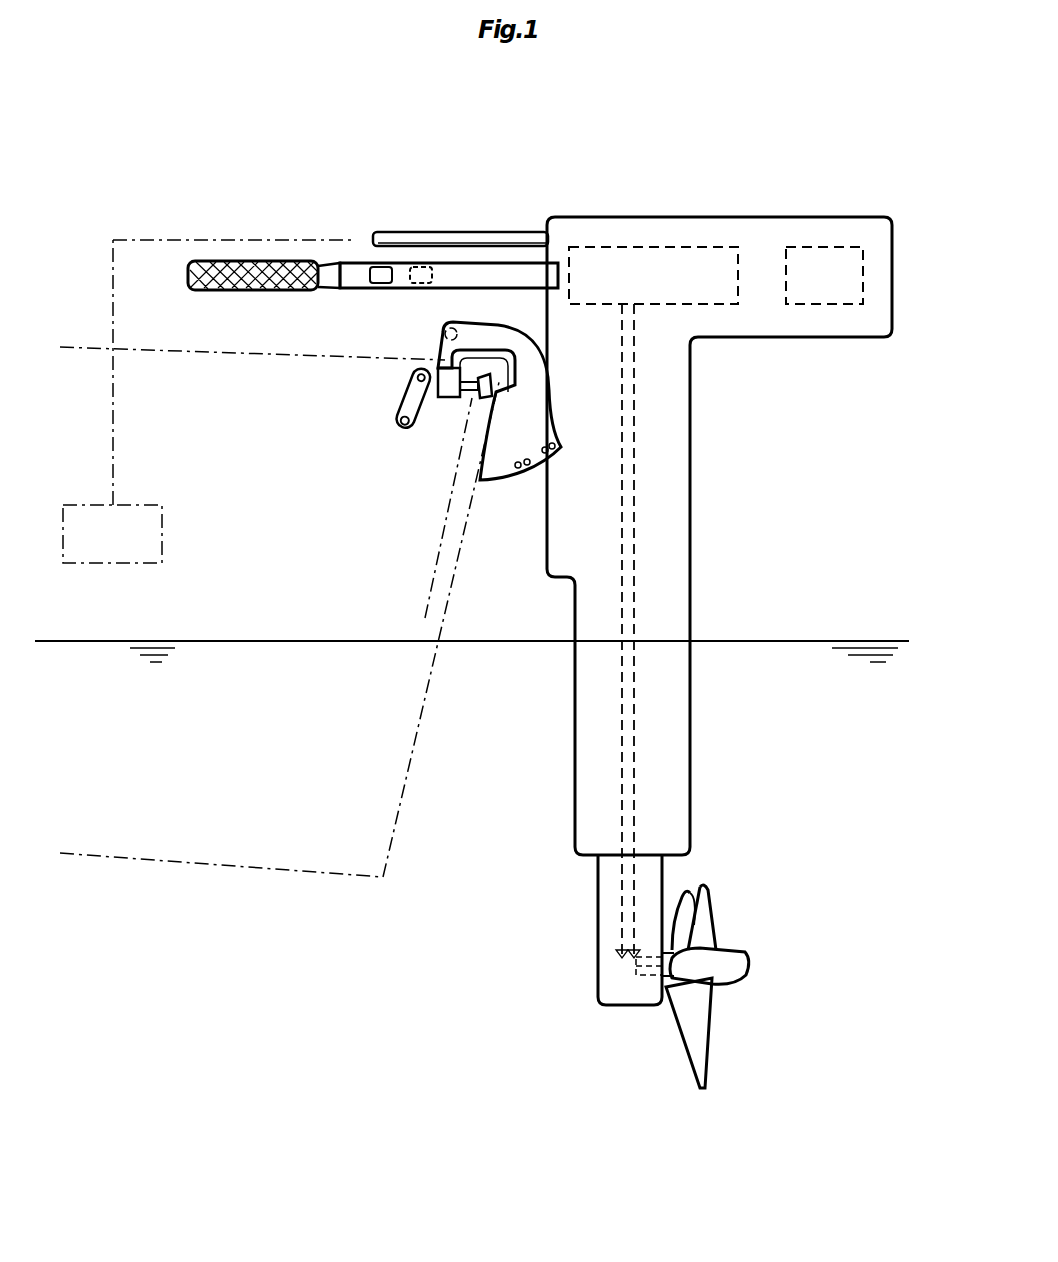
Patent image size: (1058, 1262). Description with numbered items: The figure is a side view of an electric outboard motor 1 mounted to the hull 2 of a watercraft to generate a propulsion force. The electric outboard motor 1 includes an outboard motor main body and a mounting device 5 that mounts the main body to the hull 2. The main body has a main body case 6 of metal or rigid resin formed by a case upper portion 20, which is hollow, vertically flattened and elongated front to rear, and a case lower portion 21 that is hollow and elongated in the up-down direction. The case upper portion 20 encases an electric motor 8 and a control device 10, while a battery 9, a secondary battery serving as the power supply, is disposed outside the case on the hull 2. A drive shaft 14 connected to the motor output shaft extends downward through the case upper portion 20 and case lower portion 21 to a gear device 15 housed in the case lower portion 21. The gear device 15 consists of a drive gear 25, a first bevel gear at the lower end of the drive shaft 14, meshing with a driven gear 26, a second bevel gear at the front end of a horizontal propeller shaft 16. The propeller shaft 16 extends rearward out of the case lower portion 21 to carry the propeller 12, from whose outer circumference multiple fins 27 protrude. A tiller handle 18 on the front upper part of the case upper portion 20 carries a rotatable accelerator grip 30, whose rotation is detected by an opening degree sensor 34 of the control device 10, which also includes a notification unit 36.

The electric outboard motor 1 is at (777, 138).
The hull 2 is at (161, 835).
The mounting device 5 is at (498, 452).
The main body case 6 is at (836, 406).
The electric motor 8 is at (630, 266).
The battery 9 is at (95, 518).
The control device 10 is at (822, 258).
The propeller 12 is at (748, 986).
The drive shaft 14 is at (628, 552).
The gear device 15 is at (609, 1037).
The propeller shaft 16 is at (660, 960).
The tiller handle 18 is at (373, 217).
The case upper portion 20 is at (670, 482).
The case lower portion 21 is at (650, 875).
The drive gear 25 is at (630, 958).
The driven gear 26 is at (642, 975).
The fins 27 is at (698, 1030).
The accelerator grip 30 is at (255, 266).
The opening degree sensor 34 is at (428, 280).
The notification unit 36 is at (377, 268).